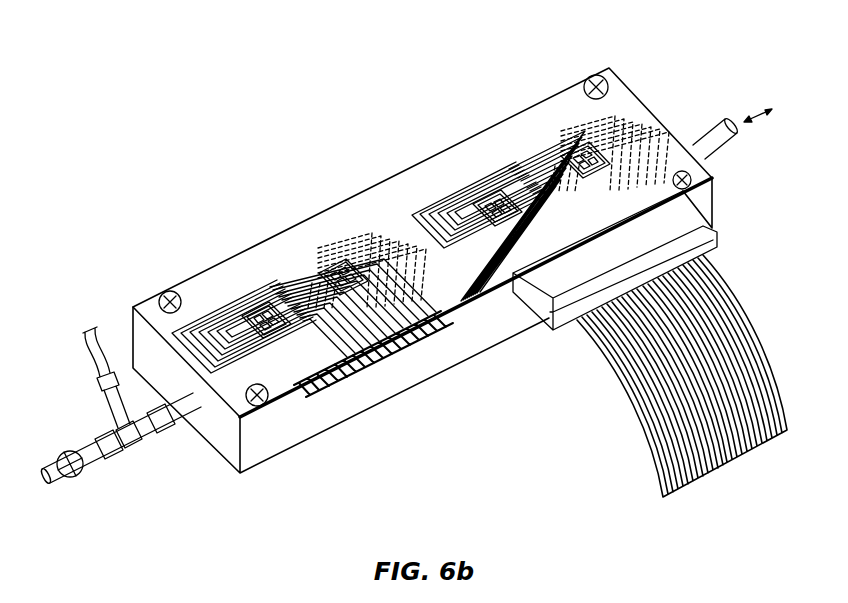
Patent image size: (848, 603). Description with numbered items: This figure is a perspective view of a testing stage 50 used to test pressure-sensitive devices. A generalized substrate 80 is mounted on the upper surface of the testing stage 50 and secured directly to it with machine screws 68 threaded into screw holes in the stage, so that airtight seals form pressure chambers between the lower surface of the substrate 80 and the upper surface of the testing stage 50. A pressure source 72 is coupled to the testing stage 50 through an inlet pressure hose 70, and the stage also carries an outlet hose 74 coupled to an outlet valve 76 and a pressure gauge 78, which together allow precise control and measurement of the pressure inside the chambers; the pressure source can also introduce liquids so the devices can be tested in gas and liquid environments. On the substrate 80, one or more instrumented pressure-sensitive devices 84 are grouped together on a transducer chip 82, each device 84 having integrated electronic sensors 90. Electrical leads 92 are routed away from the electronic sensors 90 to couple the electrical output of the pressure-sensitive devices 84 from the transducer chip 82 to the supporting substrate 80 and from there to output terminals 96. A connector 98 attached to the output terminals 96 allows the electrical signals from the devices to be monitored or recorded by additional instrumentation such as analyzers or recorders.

The testing stage 50 is at (240, 440).
The machine screws 68 is at (608, 78).
The inlet pressure hose 70 is at (712, 143).
The pressure source 72 is at (757, 112).
The outlet hose 74 is at (133, 437).
The outlet valve 76 is at (62, 447).
The pressure gauge 78 is at (93, 392).
The substrate 80 is at (390, 192).
The transducer chip 82 is at (484, 205).
The pressure-sensitive device 84 is at (502, 188).
The electronic sensors 90 is at (328, 262).
The electrical leads 92 is at (433, 293).
The output terminals 96 is at (378, 370).
The connector 98 is at (690, 213).